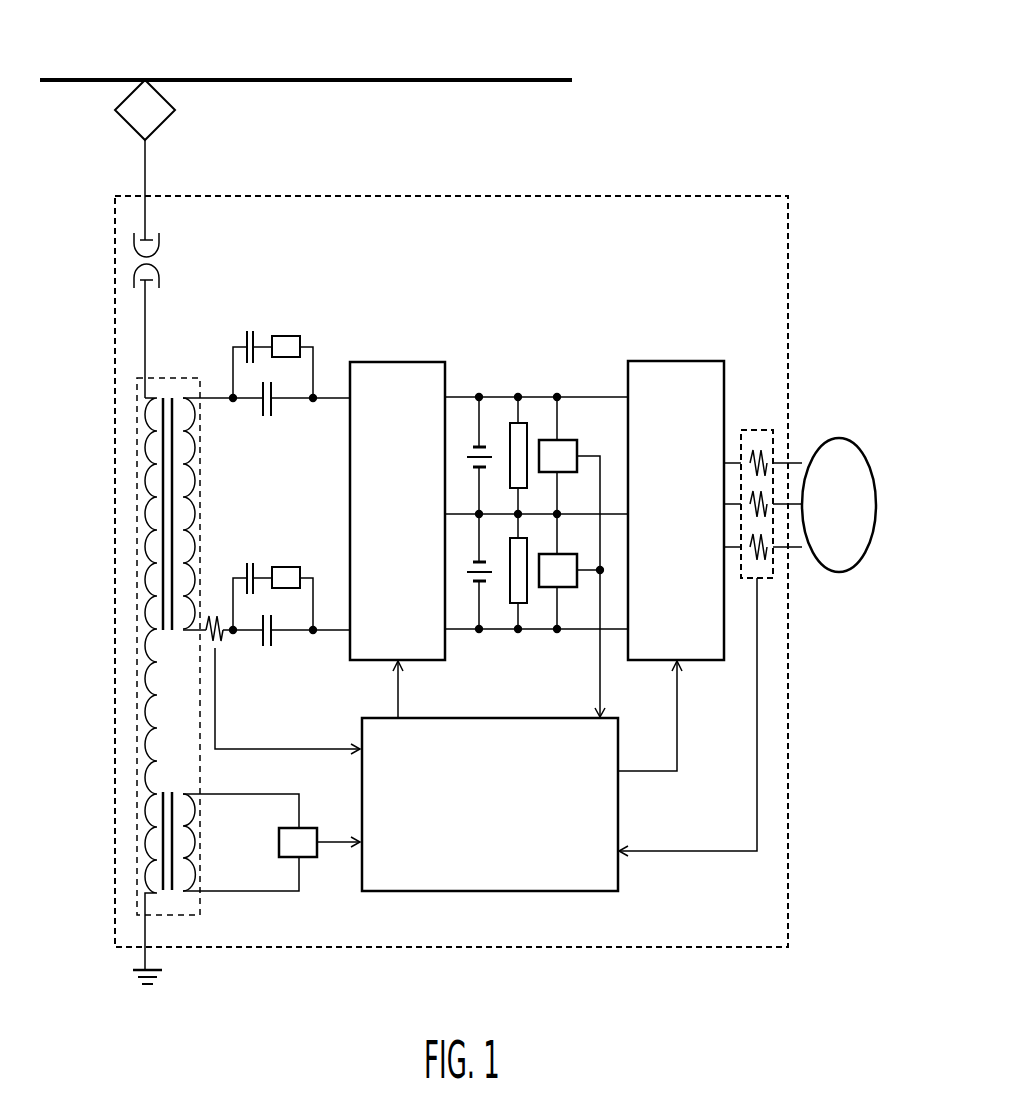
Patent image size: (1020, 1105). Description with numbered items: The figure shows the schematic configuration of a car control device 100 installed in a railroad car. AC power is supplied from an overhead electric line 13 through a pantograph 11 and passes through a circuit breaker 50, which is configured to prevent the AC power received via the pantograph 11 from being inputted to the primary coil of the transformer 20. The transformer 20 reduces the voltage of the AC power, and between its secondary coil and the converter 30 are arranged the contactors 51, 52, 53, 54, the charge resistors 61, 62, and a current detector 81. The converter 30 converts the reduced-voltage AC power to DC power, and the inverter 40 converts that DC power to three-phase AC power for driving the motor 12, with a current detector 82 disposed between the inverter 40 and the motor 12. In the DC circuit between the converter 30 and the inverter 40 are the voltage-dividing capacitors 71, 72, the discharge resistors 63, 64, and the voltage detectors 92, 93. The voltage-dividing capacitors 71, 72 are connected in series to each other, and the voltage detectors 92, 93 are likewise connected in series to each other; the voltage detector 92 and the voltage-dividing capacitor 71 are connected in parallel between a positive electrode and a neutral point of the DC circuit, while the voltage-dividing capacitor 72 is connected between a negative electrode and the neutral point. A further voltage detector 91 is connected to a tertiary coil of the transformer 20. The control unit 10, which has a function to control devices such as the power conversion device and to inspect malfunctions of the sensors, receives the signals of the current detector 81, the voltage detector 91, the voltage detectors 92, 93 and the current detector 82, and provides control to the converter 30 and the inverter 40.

The car control device 100 is at (698, 194).
The overhead electric line 13 is at (345, 78).
The pantograph 11 is at (118, 129).
The circuit breaker 50 is at (160, 255).
The transformer 20 is at (167, 378).
The contactor 51 is at (248, 328).
The charge resistor 61 is at (288, 334).
The contactor 52 is at (260, 417).
The contactor 53 is at (252, 562).
The charge resistor 62 is at (288, 566).
The contactor 54 is at (266, 650).
The current detector 81 is at (214, 614).
The voltage detector 91 is at (310, 860).
The converter 30 is at (395, 360).
The voltage-dividing capacitor 71 is at (487, 438).
The voltage-dividing capacitor 72 is at (487, 590).
The discharge resistor 63 is at (528, 428).
The discharge resistor 64 is at (528, 605).
The voltage detector 92 is at (572, 440).
The voltage detector 93 is at (570, 588).
The inverter 40 is at (686, 360).
The current detector 82 is at (757, 430).
The motor 12 is at (840, 438).
The control unit 10 is at (618, 876).